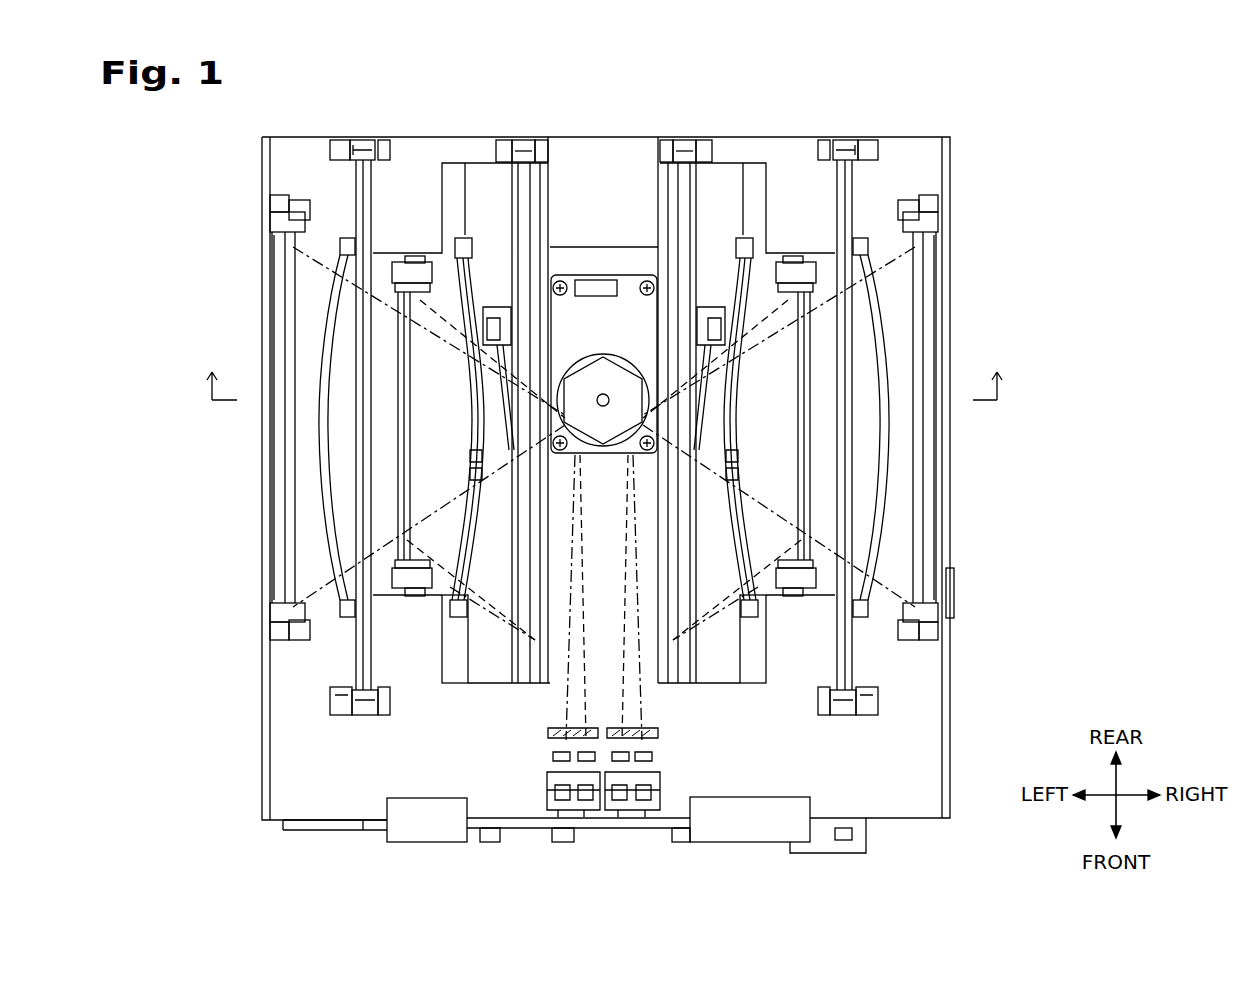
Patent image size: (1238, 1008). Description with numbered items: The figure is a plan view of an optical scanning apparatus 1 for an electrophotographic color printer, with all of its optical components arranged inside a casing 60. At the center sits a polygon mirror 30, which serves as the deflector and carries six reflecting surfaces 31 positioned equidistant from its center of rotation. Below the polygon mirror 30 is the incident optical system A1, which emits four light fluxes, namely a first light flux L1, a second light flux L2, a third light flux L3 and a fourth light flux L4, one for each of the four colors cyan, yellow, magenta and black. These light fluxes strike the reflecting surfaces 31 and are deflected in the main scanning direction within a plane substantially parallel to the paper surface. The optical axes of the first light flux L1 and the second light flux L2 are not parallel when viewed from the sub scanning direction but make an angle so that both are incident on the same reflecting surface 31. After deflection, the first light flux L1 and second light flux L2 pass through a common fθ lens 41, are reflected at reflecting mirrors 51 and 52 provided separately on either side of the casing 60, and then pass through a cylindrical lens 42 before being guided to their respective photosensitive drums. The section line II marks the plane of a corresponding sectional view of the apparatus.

The optical scanning apparatus 1 is at (992, 152).
The polygon mirror 30 is at (585, 362).
The reflecting surface 31 is at (635, 388).
The fθ lens 41 is at (490, 307).
The cylindrical lens 42 is at (316, 440).
The reflecting mirror 51 is at (405, 480).
The reflecting mirror 52 is at (520, 186).
The casing 60 is at (908, 128).
The incident optical system A1 is at (691, 754).
The first light flux L1 is at (778, 262).
The second light flux L2 is at (880, 215).
The third light flux L3 is at (435, 262).
The fourth light flux L4 is at (318, 225).
The section line II- II is at (601, 371).